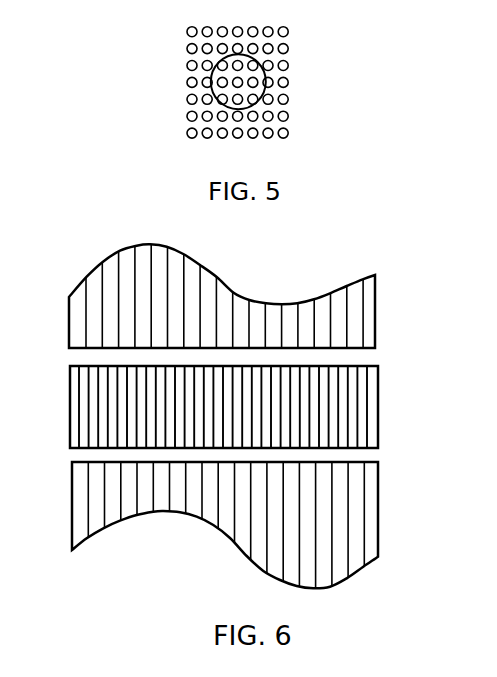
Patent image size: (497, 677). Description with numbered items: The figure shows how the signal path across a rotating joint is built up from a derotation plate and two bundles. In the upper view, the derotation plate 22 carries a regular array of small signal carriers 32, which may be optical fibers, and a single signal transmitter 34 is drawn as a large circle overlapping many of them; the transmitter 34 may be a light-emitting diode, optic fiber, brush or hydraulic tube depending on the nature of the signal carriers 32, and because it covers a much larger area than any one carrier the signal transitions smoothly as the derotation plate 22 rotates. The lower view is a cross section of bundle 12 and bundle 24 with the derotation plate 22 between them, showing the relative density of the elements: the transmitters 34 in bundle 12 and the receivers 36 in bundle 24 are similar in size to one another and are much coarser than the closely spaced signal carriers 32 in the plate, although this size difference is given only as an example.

In FIG. 6, the bundle 12 is at (228, 294).
In FIG. 6, the derotation plate 22 is at (227, 407).
In FIG. 6, the bundle 24 is at (228, 527).
In FIG. 5, the signal carrier 32 is at (290, 29).
In FIG. 6, the signal carrier 32 is at (82, 413).
In FIG. 5, the signal transmitter 34 is at (266, 88).
In FIG. 6, the signal transmitter 34 is at (91, 278).
In FIG. 6, the receiver 36 is at (82, 512).